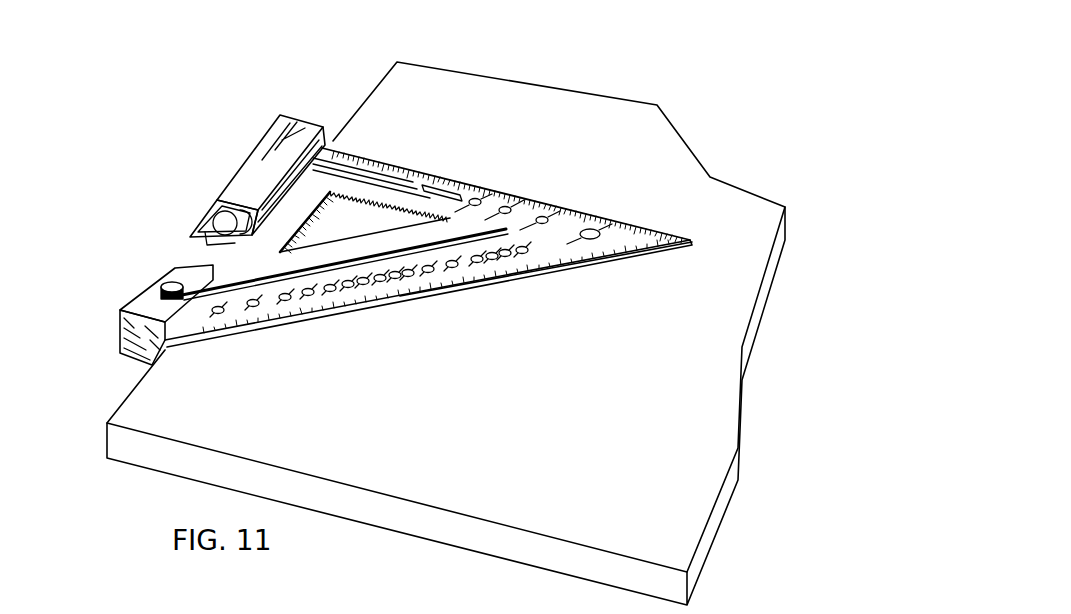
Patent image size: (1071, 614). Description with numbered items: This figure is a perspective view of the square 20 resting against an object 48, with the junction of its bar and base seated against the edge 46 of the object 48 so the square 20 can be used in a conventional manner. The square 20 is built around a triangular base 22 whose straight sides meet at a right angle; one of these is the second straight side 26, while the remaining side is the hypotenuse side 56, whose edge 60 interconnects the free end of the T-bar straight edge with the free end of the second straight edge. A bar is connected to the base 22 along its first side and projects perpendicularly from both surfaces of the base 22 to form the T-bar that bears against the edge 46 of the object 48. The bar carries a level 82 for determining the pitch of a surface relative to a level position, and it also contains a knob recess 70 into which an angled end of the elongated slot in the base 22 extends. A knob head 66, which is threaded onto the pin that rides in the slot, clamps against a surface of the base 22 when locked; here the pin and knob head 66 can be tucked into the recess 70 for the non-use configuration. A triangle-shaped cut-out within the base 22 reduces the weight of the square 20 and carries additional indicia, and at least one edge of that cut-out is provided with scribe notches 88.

The square 20 is at (318, 100).
The triangular base 22 is at (483, 185).
The second straight side 26 is at (630, 225).
The edge of an object 46 is at (123, 397).
The object 48 is at (352, 407).
The hypotenuse side 56 is at (573, 268).
The edge of the hypotenuse side 60 is at (413, 300).
The knob head 66 is at (165, 282).
The knob recess 70 is at (175, 267).
The level 82 is at (217, 220).
The scribe notches 88 is at (375, 205).